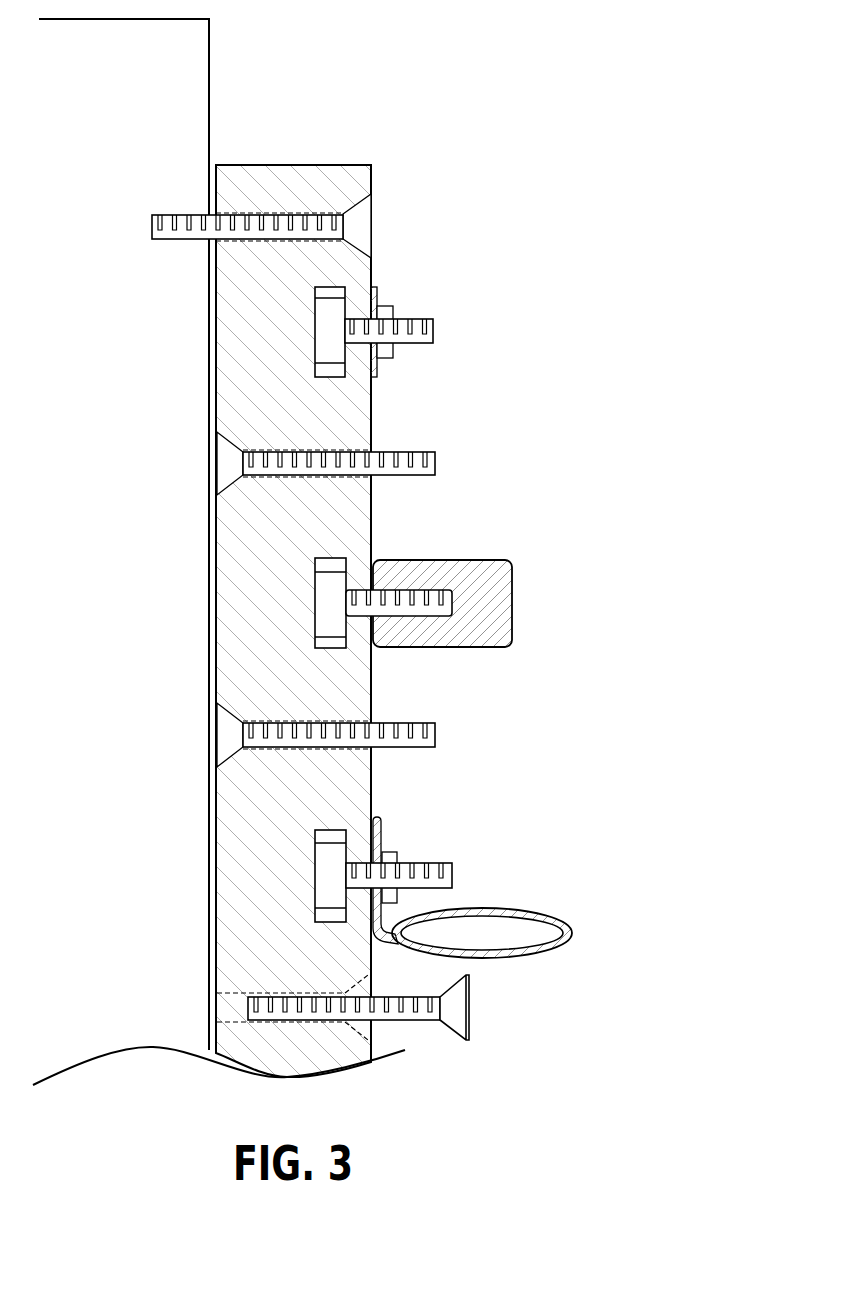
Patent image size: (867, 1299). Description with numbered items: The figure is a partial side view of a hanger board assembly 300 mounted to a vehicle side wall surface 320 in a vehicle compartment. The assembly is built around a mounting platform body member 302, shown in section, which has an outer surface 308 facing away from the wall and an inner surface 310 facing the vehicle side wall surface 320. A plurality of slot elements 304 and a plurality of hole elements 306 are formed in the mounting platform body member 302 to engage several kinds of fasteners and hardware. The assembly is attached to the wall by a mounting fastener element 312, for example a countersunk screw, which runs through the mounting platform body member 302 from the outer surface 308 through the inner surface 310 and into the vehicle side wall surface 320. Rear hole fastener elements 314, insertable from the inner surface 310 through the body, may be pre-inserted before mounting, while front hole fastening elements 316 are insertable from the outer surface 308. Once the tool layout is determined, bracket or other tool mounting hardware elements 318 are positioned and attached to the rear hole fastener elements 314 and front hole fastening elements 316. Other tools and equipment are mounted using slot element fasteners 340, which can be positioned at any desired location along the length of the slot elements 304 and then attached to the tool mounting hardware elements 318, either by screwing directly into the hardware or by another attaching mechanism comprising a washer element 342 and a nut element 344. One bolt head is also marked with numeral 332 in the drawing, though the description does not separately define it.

The hanger board assembly 300 is at (345, 552).
The mounting platform body member 302 is at (298, 393).
The slot element 304 is at (340, 373).
The hole element 306 is at (322, 472).
The outer surface 308 is at (372, 177).
The inner surface 310 is at (289, 240).
The mounting fastener element 312 is at (366, 215).
The rear hole fastener element 314 is at (369, 477).
The front hole fastening element 316 is at (470, 1012).
The tool mounting hardware element 318 is at (503, 613).
The vehicle side wall surface 320 is at (124, 534).
The bolt head 332 is at (335, 583).
The slot element fastener 340 is at (427, 584).
The washer element 342 is at (376, 288).
The nut element 344 is at (393, 308).